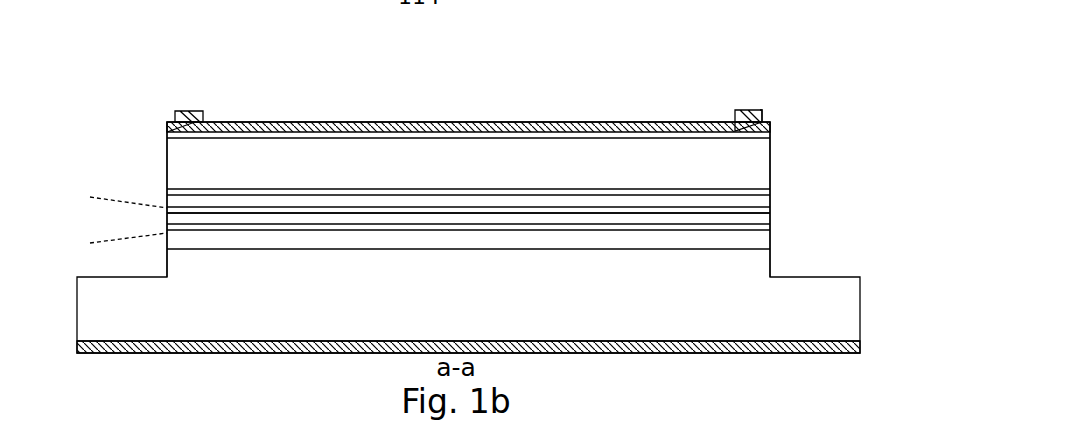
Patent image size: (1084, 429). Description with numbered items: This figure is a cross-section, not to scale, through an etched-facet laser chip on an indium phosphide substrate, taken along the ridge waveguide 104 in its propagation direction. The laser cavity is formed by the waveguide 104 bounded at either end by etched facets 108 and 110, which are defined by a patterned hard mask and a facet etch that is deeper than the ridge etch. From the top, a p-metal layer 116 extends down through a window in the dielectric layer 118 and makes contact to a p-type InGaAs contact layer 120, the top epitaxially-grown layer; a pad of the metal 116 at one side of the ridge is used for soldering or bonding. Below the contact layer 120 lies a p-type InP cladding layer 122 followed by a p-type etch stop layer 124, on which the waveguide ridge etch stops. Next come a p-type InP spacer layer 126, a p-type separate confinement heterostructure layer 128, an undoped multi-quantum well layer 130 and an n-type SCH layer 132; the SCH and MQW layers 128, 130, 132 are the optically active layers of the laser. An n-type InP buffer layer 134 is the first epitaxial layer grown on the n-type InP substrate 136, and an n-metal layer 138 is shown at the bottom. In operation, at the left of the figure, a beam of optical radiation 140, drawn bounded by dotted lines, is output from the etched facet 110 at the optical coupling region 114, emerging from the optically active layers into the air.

The waveguide 104 is at (568, 117).
The etched facet 108 is at (846, 61).
The etched facet 110 is at (164, 150).
The optical coupling region 114 is at (164, 214).
The p-metal layer 116 is at (750, 110).
The dielectric layer 118 is at (770, 122).
The p-type InGaAs contact layer 120 is at (770, 133).
The p-type InP cladding layer 122 is at (770, 165).
The p-type etch stop layer 124 is at (770, 190).
The p-type InP spacer layer 126 is at (770, 202).
The p-type separate confinement heterostructure layer 128 is at (770, 213).
The undoped multi-quantum well layer 130 is at (770, 220).
The n-type SCH layer 132 is at (770, 228).
The n-type InP buffer layer 134 is at (753, 243).
The n-type InP substrate 136 is at (850, 322).
The n-metal layer 138 is at (758, 347).
The optical radiation 140 is at (82, 232).